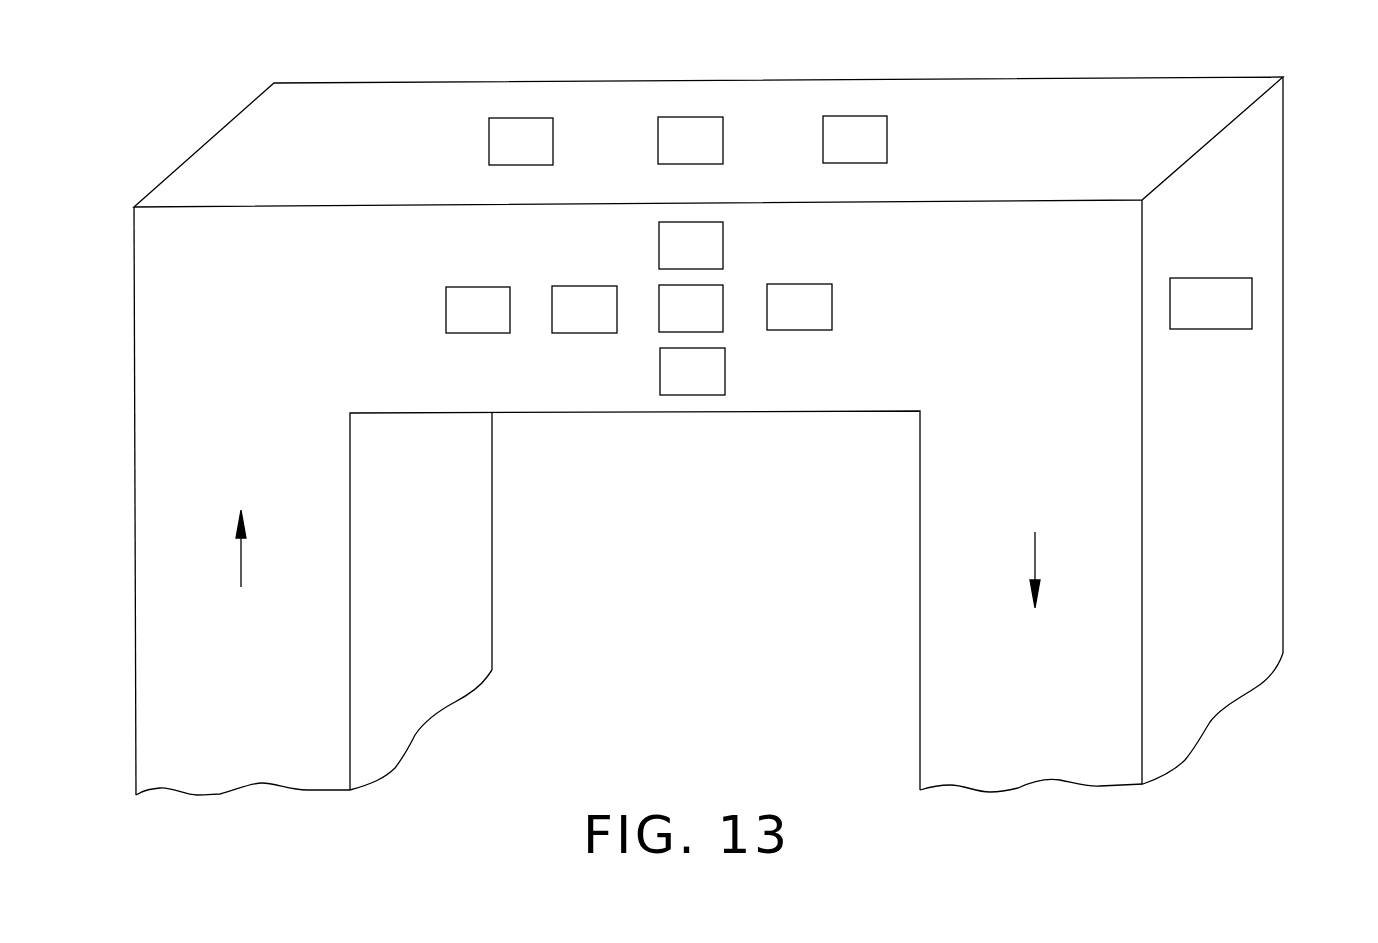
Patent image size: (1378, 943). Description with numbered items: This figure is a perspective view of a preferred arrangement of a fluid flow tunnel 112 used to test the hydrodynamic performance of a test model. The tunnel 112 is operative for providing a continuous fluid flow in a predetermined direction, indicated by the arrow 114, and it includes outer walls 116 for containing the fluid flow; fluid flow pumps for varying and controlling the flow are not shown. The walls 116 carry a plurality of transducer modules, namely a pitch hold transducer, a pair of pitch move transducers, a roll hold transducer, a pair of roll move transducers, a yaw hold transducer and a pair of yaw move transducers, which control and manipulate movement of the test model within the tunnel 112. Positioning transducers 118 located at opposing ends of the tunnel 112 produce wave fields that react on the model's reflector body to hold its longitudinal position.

The fluid flow tunnel 112 is at (207, 138).
The arrow 114 is at (241, 553).
The outer walls 116 is at (381, 98).
The positioning transducers 118 is at (1213, 312).